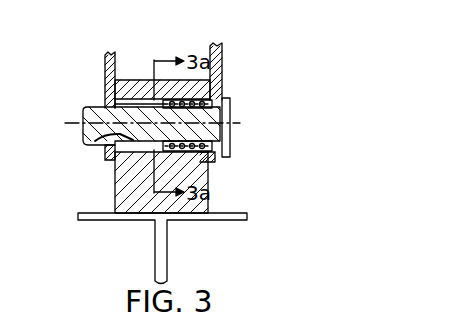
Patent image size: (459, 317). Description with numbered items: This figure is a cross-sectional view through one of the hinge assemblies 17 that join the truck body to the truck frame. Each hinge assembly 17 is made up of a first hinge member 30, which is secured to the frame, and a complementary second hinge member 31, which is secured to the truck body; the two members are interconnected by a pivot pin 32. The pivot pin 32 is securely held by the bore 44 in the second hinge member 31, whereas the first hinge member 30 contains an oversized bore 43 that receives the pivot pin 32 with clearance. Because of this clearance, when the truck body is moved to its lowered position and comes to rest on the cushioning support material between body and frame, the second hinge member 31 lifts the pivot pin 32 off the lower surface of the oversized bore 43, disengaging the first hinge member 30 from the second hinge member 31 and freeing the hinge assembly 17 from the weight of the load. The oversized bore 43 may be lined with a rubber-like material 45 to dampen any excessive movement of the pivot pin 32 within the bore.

The hinge assembly 17 is at (240, 82).
The first hinge member 30 is at (118, 194).
The second hinge member 31 is at (226, 48).
The pivot pin 32 is at (102, 107).
The oversized bore 43 is at (96, 148).
The bore 44 is at (232, 93).
The rubber-like material 45 is at (218, 166).